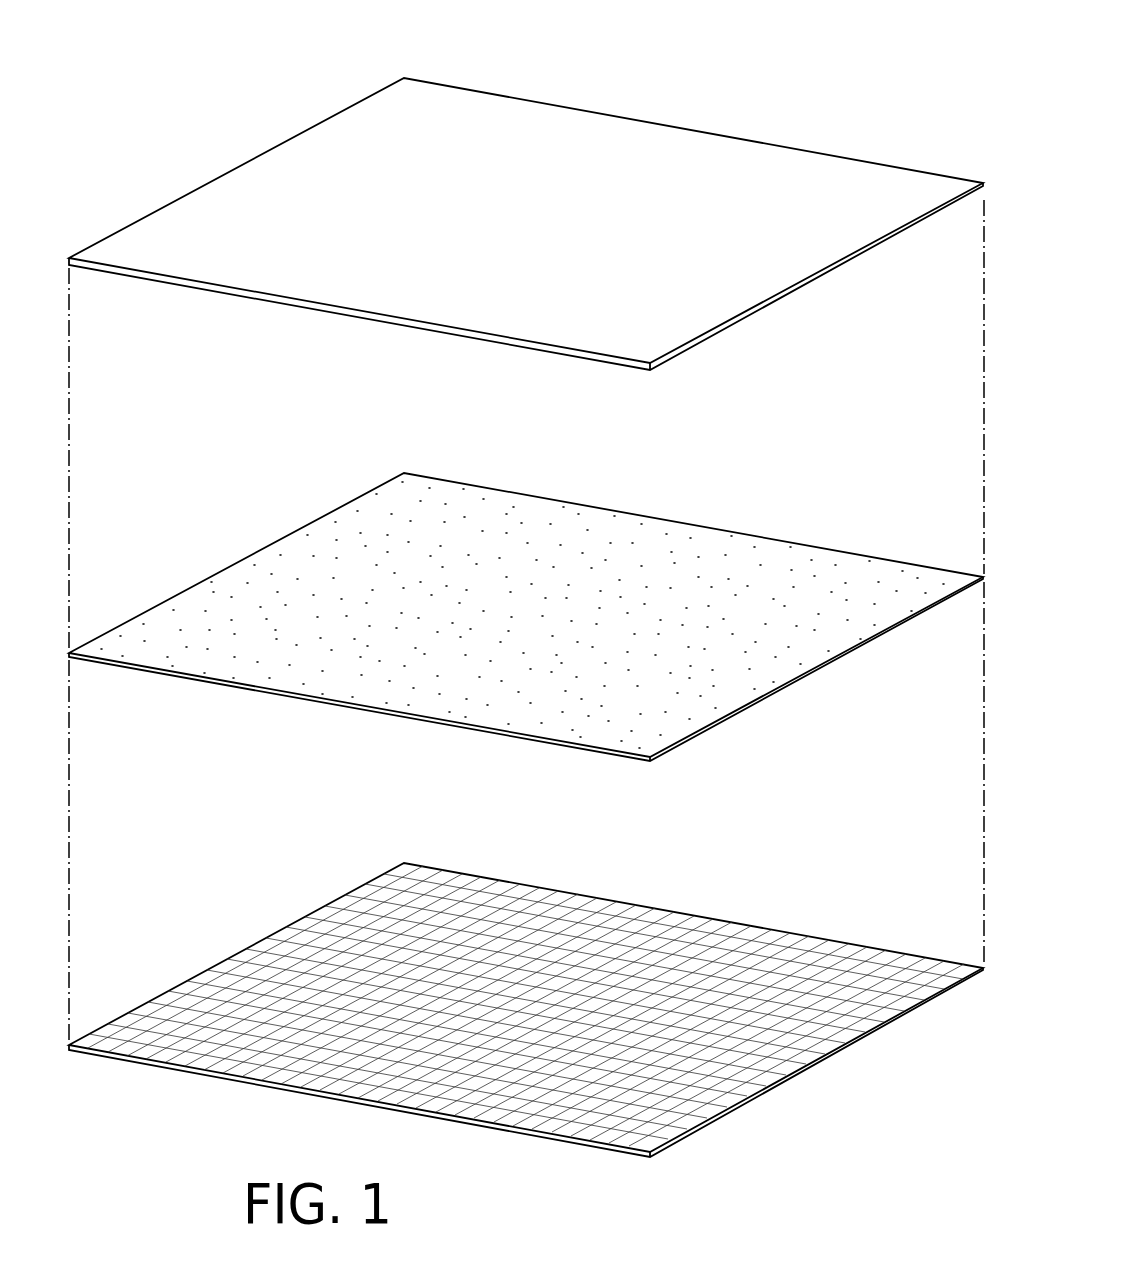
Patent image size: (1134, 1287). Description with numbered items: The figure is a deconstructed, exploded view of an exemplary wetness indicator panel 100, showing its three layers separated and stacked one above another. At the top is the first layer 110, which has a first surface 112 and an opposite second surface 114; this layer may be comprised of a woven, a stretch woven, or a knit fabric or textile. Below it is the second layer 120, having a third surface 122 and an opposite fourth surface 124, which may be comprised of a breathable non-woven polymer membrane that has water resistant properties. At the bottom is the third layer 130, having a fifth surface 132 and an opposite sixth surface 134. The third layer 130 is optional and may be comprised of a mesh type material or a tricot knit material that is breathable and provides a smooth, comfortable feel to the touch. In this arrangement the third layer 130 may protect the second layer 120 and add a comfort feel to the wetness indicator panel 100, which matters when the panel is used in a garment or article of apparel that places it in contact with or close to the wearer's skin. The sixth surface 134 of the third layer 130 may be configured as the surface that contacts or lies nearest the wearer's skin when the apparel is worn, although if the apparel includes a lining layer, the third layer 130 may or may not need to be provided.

The wetness indicator panel 100 is at (878, 45).
The first layer 110 is at (526, 225).
The first surface 112 is at (806, 259).
The second surface 114 is at (727, 327).
The second layer 120 is at (526, 617).
The third surface 122 is at (805, 653).
The fourth surface 124 is at (725, 720).
The third layer 130 is at (526, 1010).
The fifth surface 132 is at (805, 1044).
The sixth surface 134 is at (727, 1112).